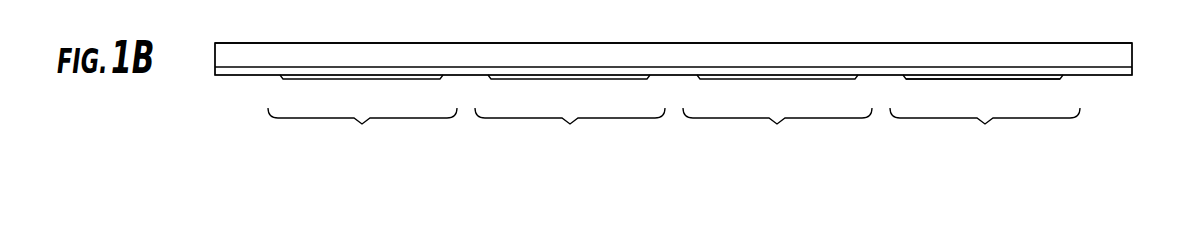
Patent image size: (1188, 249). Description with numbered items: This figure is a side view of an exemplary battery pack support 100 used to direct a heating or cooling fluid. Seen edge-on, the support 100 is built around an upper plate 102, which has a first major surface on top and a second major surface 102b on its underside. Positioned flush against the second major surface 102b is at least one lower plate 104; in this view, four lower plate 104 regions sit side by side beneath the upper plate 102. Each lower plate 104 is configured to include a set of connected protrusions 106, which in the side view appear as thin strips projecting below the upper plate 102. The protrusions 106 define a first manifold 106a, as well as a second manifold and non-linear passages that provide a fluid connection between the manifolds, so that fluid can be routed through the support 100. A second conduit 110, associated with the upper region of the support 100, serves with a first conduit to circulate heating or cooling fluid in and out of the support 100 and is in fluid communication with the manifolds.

The battery pack support 100 is at (1099, 139).
The upper plate 102 is at (201, 83).
The second major surface 102b is at (370, 64).
The lower plate 104 is at (674, 133).
The protrusions 106 is at (931, 90).
The first manifold 106a is at (1034, 82).
The second conduit 110 is at (260, 40).